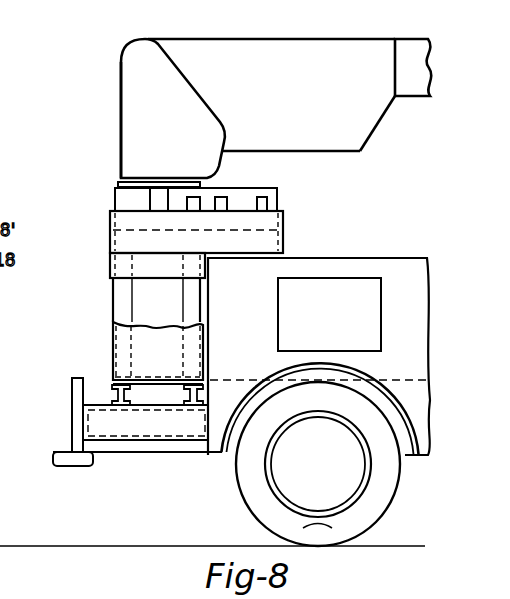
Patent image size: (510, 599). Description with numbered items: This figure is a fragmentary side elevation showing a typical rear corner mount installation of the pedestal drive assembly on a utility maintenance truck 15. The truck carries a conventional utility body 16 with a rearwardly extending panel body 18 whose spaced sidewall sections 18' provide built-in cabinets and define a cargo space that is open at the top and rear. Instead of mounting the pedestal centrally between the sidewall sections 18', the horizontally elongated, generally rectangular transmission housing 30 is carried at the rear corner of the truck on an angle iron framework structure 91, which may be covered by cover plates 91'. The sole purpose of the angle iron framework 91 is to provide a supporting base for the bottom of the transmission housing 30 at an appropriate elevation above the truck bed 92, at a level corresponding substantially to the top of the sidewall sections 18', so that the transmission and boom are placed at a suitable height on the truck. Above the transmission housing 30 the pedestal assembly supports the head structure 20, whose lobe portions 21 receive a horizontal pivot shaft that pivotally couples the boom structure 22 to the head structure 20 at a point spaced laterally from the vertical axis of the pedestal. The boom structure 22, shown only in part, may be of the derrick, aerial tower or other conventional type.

The utility maintenance truck 15 is at (297, 234).
The utility body 16 is at (213, 455).
The panel body 18 is at (319, 382).
The sidewall sections 18' is at (318, 238).
The head structure 20 is at (120, 123).
The lobe portions 21 is at (130, 150).
The boom structure 22 is at (318, 40).
The transmission housing 30 is at (110, 229).
The angle iron framework structure 91 is at (180, 304).
The cover plates 91' is at (132, 351).
The truck bed 92 is at (208, 392).